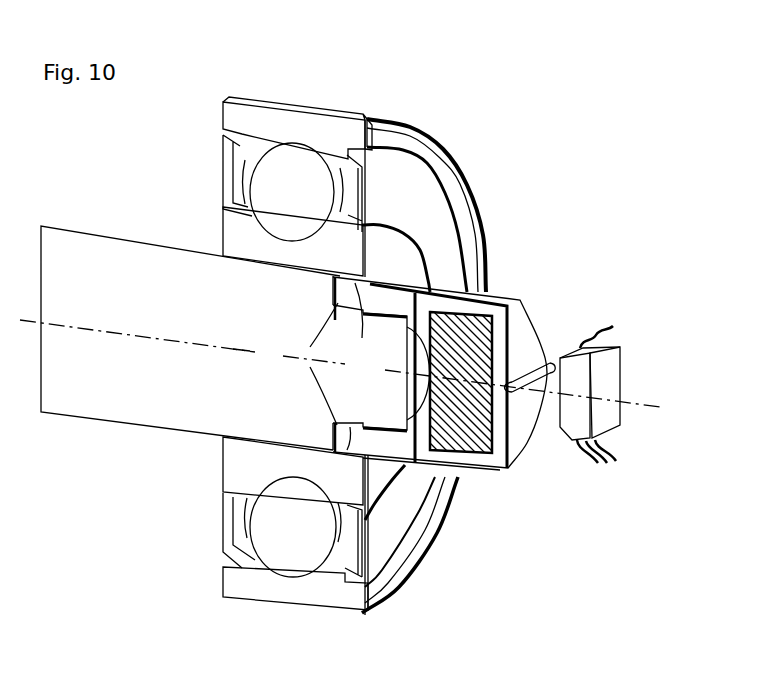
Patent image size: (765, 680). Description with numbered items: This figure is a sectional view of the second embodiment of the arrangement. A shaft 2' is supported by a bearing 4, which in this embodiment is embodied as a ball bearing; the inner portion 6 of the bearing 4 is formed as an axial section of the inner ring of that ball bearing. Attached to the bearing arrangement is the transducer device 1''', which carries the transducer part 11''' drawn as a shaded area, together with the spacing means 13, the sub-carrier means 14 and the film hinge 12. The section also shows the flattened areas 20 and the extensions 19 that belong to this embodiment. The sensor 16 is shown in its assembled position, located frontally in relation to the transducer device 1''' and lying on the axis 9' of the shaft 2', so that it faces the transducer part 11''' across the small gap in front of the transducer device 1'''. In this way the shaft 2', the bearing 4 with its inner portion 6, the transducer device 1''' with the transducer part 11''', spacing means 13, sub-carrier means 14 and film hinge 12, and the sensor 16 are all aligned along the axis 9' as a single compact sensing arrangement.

The shaft 2' is at (202, 295).
The axis 9' is at (340, 274).
The inner portion 6 is at (255, 354).
The bearing 4 is at (389, 112).
The flattened areas 20 is at (383, 293).
The spacing means 13 is at (427, 298).
The transducer device 1''' is at (454, 345).
The sub-carrier means 14 is at (492, 292).
The transducer part 11''' is at (464, 447).
The extensions 19 is at (381, 368).
The film hinge 12 is at (527, 397).
The sensor 16 is at (624, 393).